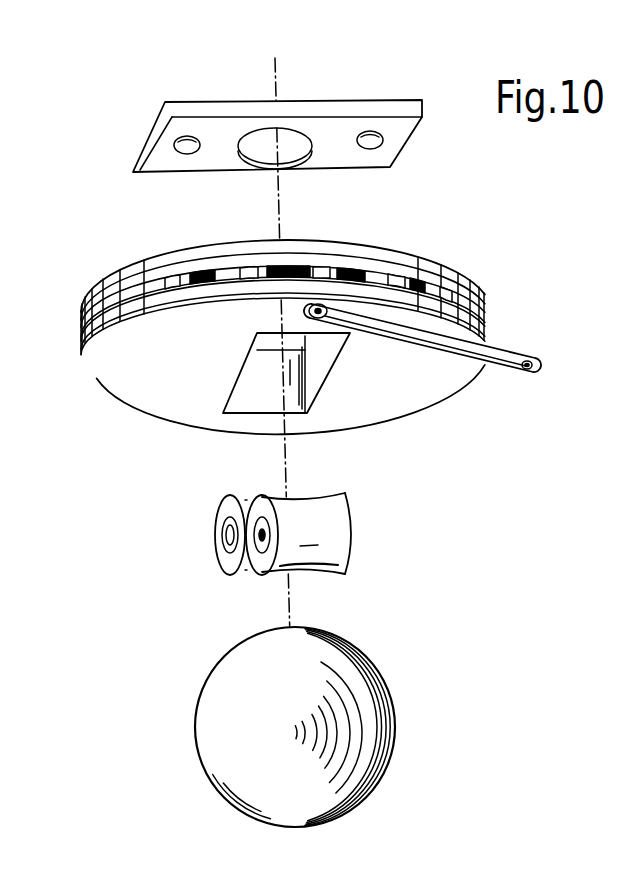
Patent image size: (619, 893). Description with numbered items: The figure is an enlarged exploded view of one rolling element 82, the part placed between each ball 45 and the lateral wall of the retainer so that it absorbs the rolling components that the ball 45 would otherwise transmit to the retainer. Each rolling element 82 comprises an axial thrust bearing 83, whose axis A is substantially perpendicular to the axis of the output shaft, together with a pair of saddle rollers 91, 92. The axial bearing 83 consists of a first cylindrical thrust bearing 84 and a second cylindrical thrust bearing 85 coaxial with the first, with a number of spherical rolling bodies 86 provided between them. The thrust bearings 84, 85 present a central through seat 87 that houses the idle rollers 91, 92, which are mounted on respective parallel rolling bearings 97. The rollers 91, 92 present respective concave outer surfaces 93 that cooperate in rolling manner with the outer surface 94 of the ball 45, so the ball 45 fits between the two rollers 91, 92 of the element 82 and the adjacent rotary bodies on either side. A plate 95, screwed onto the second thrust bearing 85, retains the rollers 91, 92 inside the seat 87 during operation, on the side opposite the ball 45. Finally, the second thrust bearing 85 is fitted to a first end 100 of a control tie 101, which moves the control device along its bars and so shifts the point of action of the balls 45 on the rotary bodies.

The axis A is at (281, 72).
The rolling element 82 is at (255, 129).
The axial thrust bearing 83 is at (289, 329).
The first cylindrical thrust bearing 84 is at (283, 273).
The second cylindrical thrust bearing 85 is at (85, 378).
The spherical rolling bodies 86 is at (175, 278).
The central through seat 87 is at (317, 377).
The saddle roller 91 is at (340, 548).
The saddle roller 92 is at (193, 566).
The concave outer surface 93 is at (246, 494).
The outer surface 94 is at (387, 666).
The plate 95 is at (383, 163).
The rolling bearing 97 is at (222, 536).
The first end 100 is at (330, 312).
The control tie 101 is at (517, 357).
The ball 45 is at (357, 743).